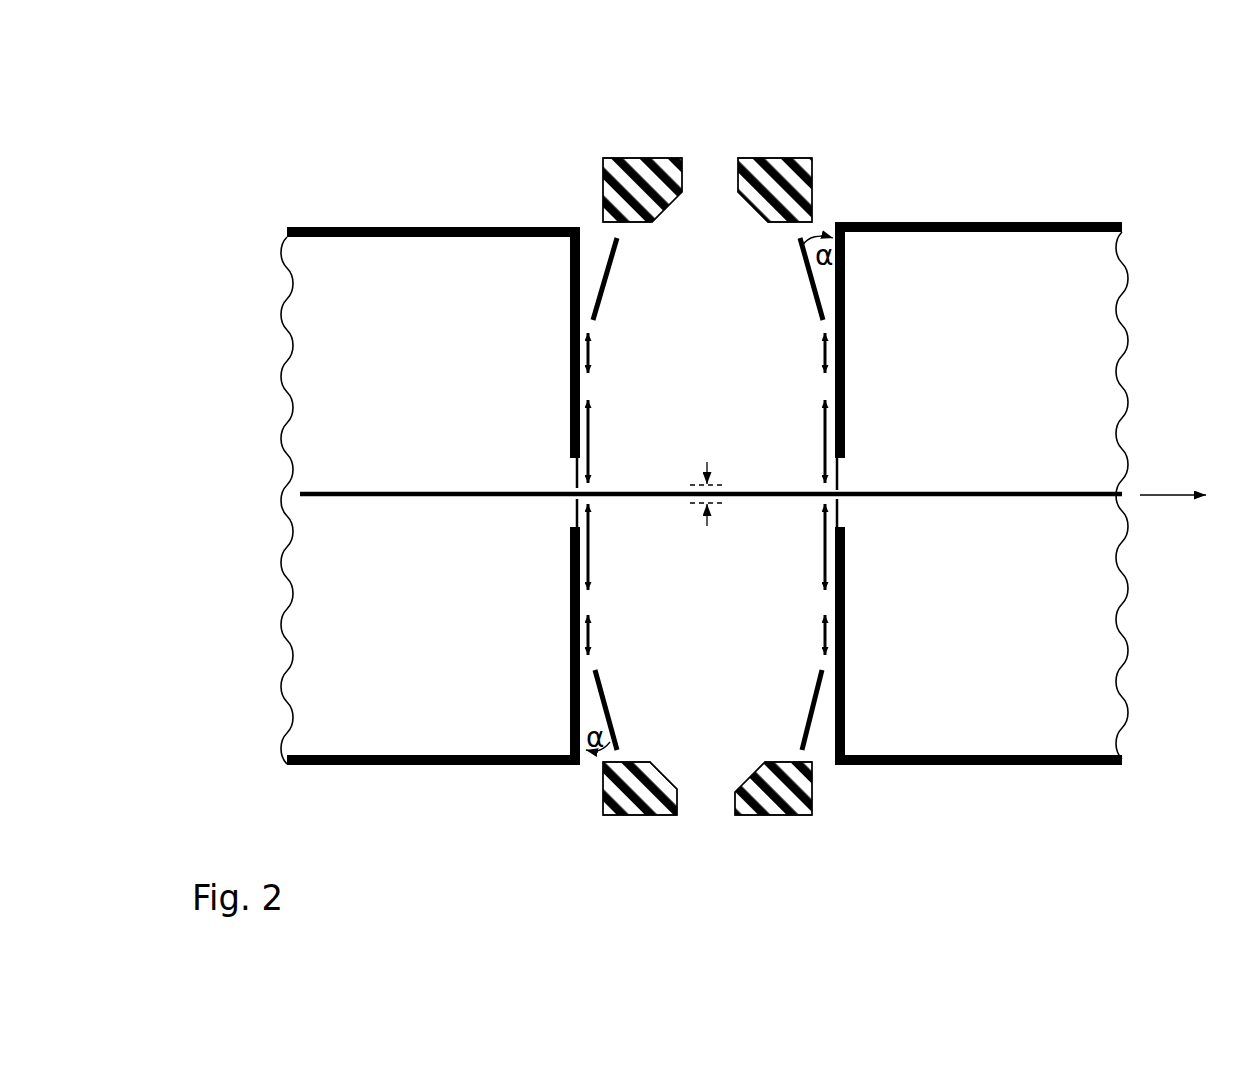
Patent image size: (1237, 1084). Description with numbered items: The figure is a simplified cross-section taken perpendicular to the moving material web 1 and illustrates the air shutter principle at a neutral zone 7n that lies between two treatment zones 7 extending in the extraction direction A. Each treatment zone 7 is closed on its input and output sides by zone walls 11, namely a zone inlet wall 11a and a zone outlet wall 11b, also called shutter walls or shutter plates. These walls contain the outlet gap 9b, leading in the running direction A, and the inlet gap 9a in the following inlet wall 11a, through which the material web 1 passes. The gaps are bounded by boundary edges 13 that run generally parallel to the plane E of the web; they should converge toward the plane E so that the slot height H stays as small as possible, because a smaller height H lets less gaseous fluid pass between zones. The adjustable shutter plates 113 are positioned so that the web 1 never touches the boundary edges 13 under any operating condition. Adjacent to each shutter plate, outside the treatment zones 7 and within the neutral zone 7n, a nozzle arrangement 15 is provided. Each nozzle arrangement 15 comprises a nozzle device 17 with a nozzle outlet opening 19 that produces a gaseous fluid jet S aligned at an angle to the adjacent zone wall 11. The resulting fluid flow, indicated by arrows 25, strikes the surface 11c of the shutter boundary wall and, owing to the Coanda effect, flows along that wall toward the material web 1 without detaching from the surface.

The material web 1 is at (330, 497).
The treatment zone 7 is at (420, 195).
The neutral zone 7n is at (707, 825).
The inlet gap 9a is at (855, 462).
The outlet gap 9b is at (546, 517).
The zone wall 11 is at (714, 490).
The zone inlet wall 11a is at (845, 690).
The zone outlet wall 11b is at (572, 640).
The surface of shutter boundary wall 11c is at (582, 262).
The boundary edge 13 is at (572, 466).
The shutter plate 113 is at (567, 483).
The nozzle arrangement 15 is at (692, 495).
The nozzle device 17 is at (636, 165).
The nozzle outlet opening 19 is at (630, 234).
The arrows 25 is at (708, 504).
The gaseous fluid jet S is at (591, 418).
The slot height H is at (708, 462).
The plane of the material web E is at (1055, 497).
The extraction direction A is at (1165, 488).